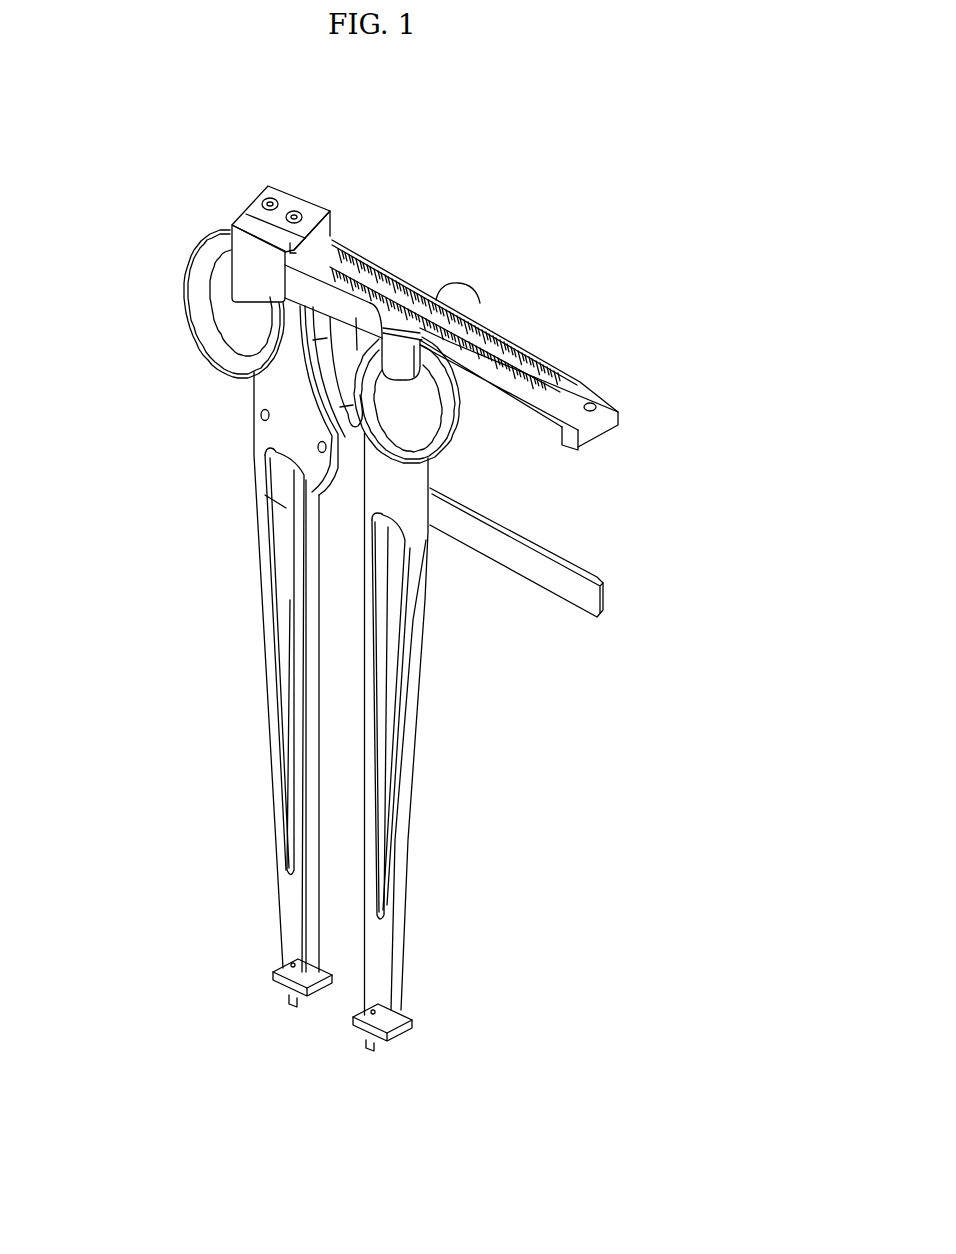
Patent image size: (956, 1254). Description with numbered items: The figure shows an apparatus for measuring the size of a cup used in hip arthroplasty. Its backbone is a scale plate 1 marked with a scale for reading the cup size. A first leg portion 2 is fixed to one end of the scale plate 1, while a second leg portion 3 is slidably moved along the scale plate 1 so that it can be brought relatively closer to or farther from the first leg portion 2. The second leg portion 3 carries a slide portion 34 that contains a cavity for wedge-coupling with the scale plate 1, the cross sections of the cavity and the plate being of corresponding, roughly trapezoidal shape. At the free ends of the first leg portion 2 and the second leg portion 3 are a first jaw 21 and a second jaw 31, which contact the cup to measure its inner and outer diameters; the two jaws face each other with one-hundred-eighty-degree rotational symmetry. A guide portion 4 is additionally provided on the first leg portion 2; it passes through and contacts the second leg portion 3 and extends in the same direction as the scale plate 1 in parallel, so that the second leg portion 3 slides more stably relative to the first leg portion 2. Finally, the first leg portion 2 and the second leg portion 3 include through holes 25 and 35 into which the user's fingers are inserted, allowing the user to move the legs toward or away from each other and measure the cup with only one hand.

The scale plate 1 is at (553, 351).
The first leg portion 2 is at (243, 436).
The second leg portion 3 is at (442, 565).
The guide portion 4 is at (588, 554).
The first jaw 21 is at (300, 1000).
The through hole 25 is at (225, 313).
The second jaw 31 is at (383, 1041).
The slide portion 34 is at (397, 350).
The through hole 35 is at (410, 417).